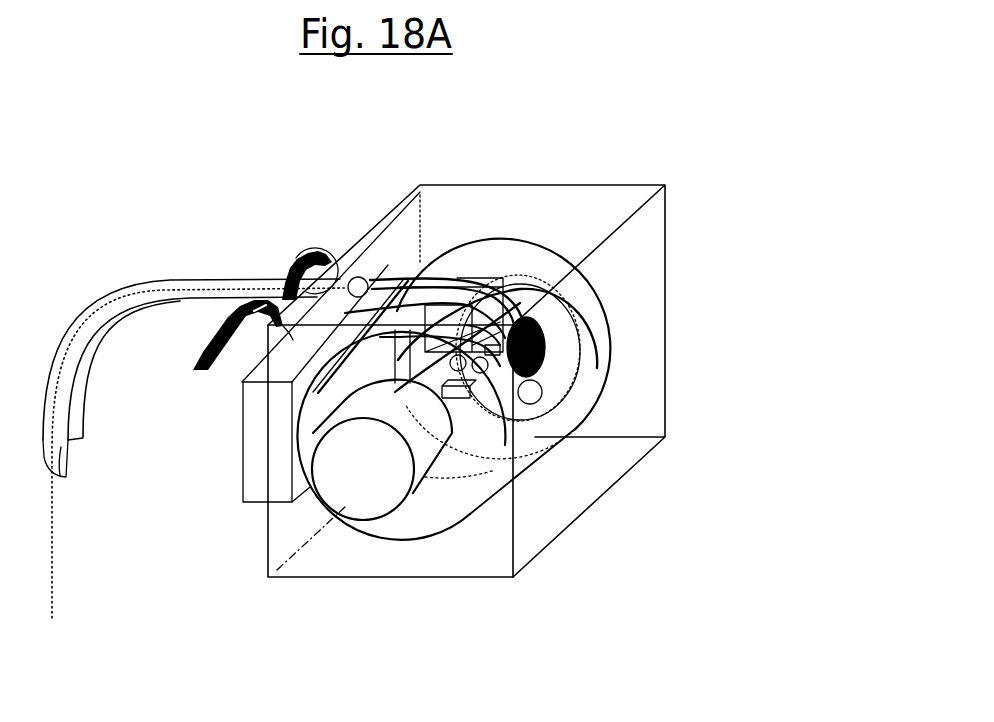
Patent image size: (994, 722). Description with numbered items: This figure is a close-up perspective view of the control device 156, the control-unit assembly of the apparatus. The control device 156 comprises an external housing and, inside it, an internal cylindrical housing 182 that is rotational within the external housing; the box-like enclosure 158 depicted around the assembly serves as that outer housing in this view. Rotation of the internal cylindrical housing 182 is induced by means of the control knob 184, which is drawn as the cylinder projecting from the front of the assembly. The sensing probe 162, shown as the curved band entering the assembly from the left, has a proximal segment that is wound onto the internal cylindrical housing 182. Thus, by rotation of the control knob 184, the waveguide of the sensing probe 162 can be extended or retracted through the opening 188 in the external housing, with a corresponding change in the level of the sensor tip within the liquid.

The control device 156 is at (207, 538).
The housing 158 is at (668, 233).
The sensing probe 162 is at (72, 555).
The internal cylindrical housing 182 is at (620, 335).
The control knob 184 is at (358, 485).
The opening 188 is at (352, 279).